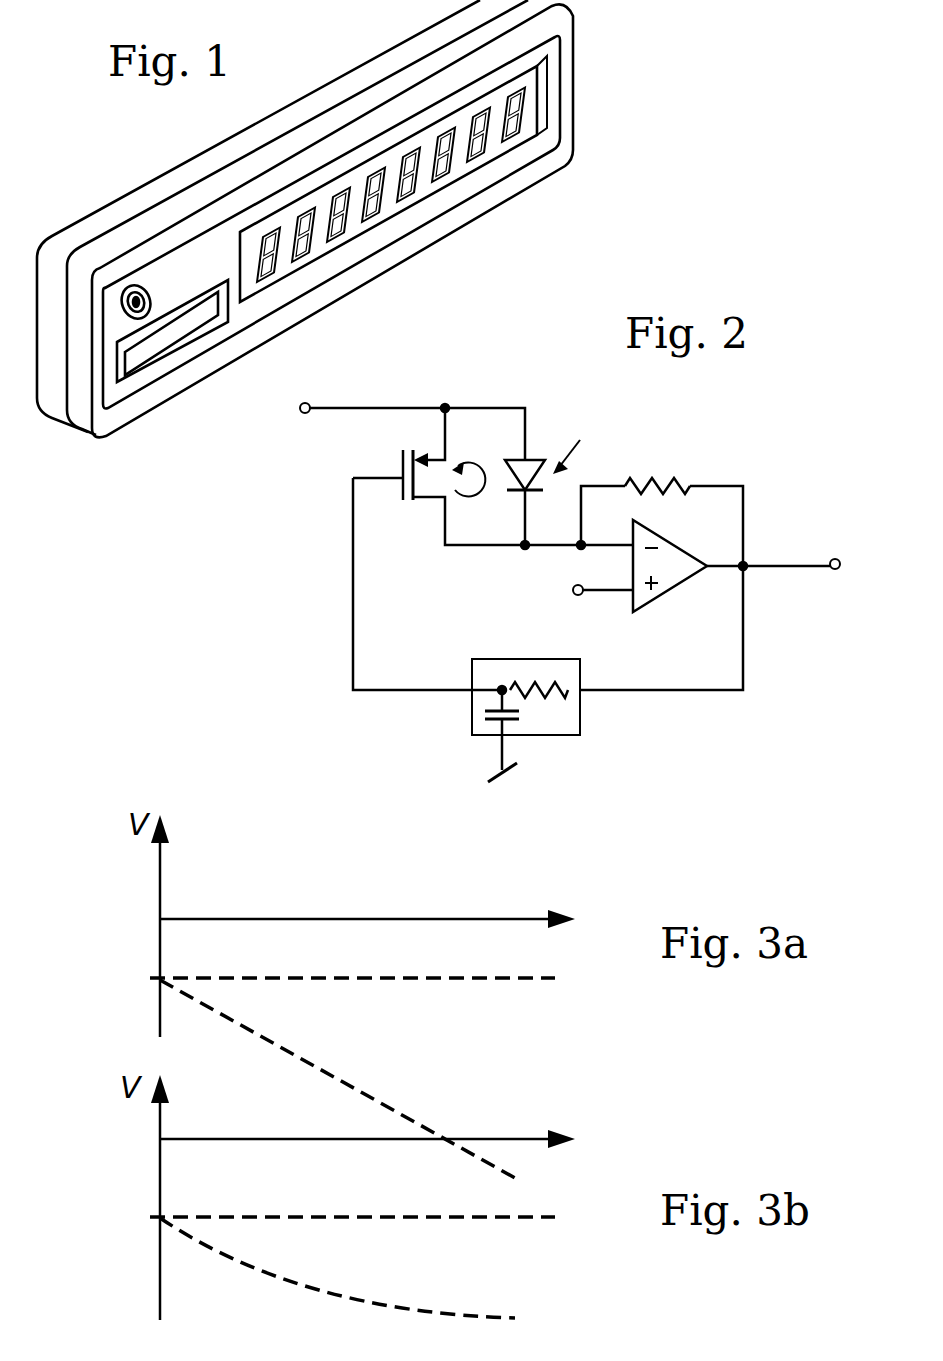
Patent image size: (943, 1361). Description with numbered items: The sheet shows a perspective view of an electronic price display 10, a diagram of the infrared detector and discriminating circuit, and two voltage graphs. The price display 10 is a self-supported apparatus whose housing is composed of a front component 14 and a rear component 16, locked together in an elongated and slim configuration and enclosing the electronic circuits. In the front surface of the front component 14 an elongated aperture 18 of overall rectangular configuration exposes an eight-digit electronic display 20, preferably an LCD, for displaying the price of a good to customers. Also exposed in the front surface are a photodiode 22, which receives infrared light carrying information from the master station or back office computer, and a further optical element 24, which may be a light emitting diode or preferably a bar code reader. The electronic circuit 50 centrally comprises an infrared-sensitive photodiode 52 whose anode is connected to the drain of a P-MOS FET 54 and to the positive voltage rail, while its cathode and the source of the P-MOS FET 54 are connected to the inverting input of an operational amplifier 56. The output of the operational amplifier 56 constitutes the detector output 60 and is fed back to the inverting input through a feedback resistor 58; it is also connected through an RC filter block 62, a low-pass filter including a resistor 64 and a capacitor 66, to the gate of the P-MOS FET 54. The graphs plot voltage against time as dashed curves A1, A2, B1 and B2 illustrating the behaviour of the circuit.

In FIG. 1, the price display 10 is at (346, 249).
In FIG. 1, the front component 14 is at (86, 433).
In FIG. 1, the rear component 16 is at (53, 420).
In FIG. 1, the elongated aperture 18 is at (488, 165).
In FIG. 1, the 8-digit electronic display 20 is at (531, 117).
In FIG. 1, the photodiode 22 is at (133, 290).
In FIG. 1, the optical element 24 is at (146, 360).
In FIG. 2, the electronic circuit 50 is at (559, 586).
In FIG. 2, the photodiode 52 is at (535, 456).
In FIG. 2, the P-MOS FET 54 is at (403, 498).
In FIG. 2, the operational amplifier 56 is at (676, 582).
In FIG. 2, the feedback resistor 58 is at (667, 480).
In FIG. 2, the detector output 60 is at (835, 570).
In FIG. 2, the RC filter block 62 is at (500, 665).
In FIG. 2, the resistor 64 is at (550, 680).
In FIG. 2, the capacitor 66 is at (493, 725).
In FIG. 3A, the voltage curve A1 is at (377, 982).
In FIG. 3A, the voltage curve A2 is at (406, 1108).
In FIG. 3B, the voltage curve B1 is at (367, 1297).
In FIG. 3B, the voltage curve B2 is at (457, 1219).